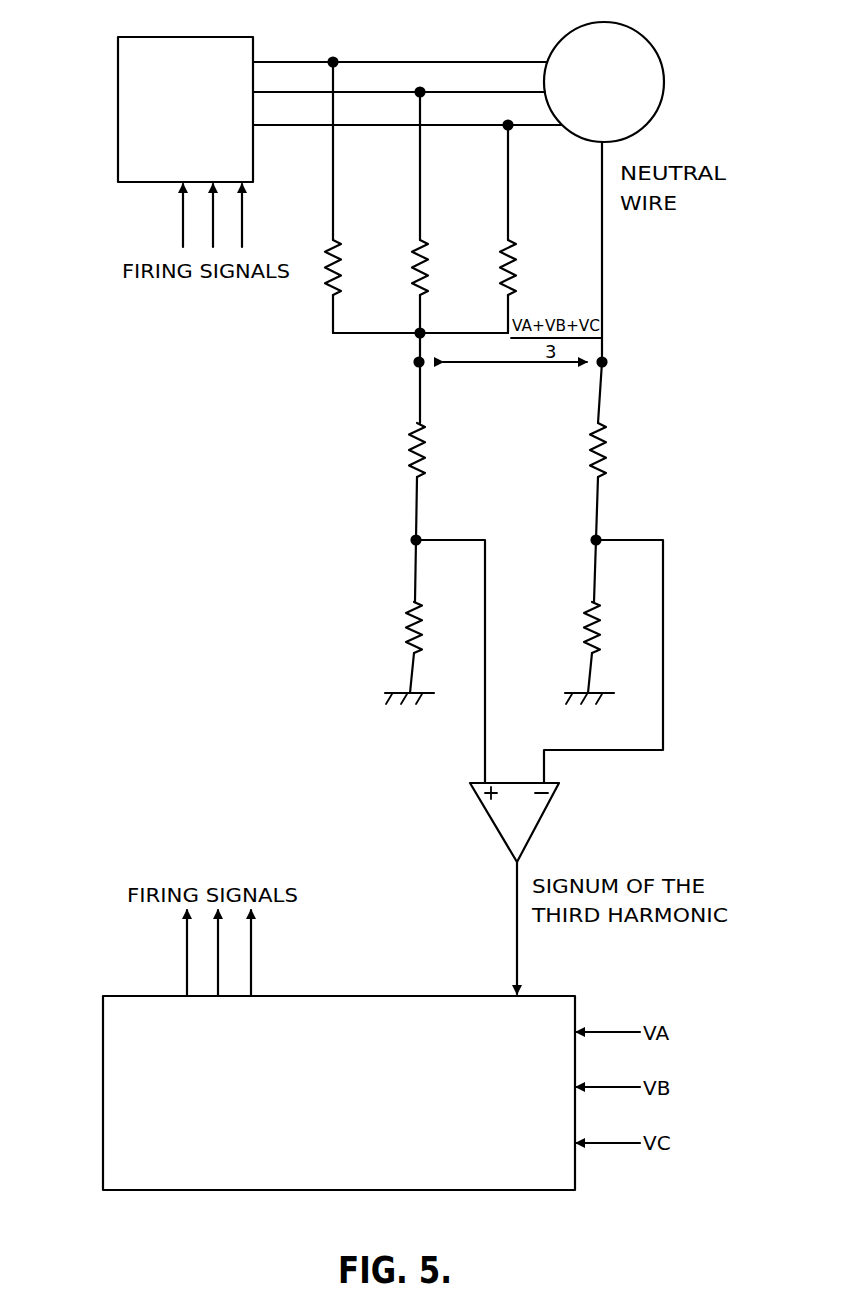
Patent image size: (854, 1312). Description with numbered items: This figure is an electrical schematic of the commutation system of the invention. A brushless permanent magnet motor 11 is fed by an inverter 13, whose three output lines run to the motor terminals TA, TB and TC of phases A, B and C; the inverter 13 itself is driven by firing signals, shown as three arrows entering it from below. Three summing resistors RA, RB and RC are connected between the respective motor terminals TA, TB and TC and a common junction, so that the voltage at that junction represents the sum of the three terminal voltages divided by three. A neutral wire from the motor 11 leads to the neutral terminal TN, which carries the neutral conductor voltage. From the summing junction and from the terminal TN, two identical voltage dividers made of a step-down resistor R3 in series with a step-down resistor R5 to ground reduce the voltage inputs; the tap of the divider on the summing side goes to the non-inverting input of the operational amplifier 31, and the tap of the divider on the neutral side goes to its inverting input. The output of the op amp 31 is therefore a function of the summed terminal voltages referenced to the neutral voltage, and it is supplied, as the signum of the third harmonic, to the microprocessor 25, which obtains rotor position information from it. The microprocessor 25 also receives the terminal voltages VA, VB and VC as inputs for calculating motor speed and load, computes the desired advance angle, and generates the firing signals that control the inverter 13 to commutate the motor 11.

The brushless permanent magnet motor 11 is at (663, 73).
The inverter output stage 13 is at (118, 148).
The microprocessor 25 is at (345, 996).
The operational amplifier 31 is at (476, 805).
The motor terminal TA is at (337, 56).
The motor terminal TB is at (423, 87).
The motor terminal TC is at (511, 120).
The motor terminal TN is at (606, 362).
The summing resistor RA is at (341, 268).
The summing resistor RB is at (428, 268).
The summing resistor RC is at (516, 268).
The step-down resistor R3 is at (425, 450).
The step-down resistor R5 is at (422, 627).